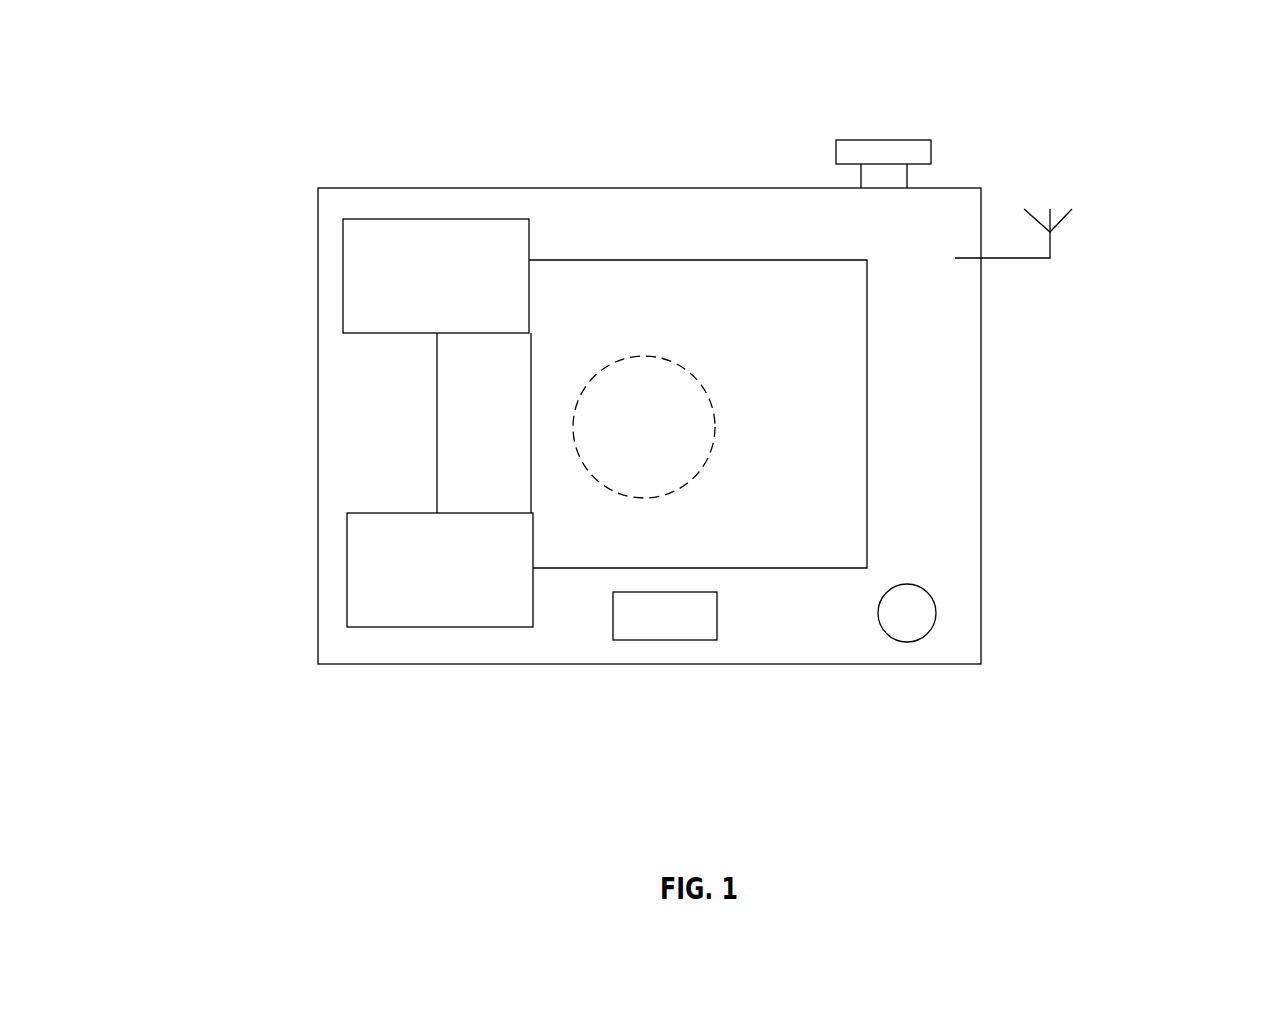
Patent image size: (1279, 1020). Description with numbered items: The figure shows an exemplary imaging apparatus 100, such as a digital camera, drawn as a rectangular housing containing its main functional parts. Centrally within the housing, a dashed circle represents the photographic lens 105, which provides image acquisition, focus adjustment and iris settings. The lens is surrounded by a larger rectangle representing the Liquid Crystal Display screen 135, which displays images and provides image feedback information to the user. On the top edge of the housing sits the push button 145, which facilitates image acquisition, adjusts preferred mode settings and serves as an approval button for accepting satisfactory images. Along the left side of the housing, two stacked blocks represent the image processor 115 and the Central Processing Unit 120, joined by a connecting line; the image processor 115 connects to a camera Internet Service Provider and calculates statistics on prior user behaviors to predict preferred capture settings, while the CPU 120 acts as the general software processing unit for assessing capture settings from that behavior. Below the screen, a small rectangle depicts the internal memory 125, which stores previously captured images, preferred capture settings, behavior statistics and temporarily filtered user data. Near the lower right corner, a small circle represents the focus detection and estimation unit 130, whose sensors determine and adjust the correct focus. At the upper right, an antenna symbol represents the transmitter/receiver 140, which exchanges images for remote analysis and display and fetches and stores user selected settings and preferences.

The imaging apparatus 100 is at (1208, 95).
The photographic lens 105 is at (674, 422).
The image processor 115 is at (387, 247).
The Central Processing Unit 120 is at (375, 594).
The internal memory 125 is at (648, 617).
The focus detection and estimation unit 130 is at (906, 623).
The Liquid Crystal Display screen 135 is at (832, 517).
The transmitter/receiver 140 is at (1077, 247).
The push button 145 is at (957, 150).